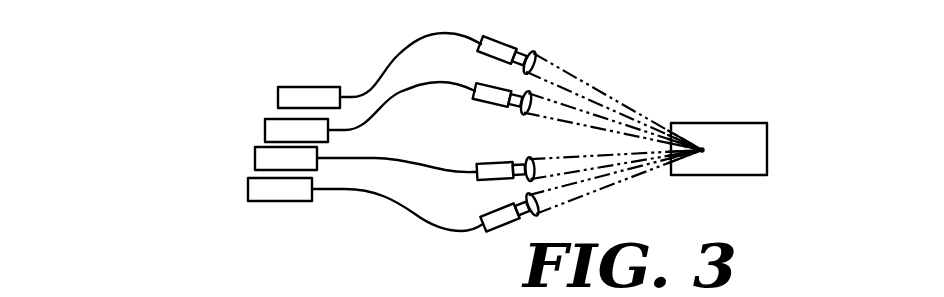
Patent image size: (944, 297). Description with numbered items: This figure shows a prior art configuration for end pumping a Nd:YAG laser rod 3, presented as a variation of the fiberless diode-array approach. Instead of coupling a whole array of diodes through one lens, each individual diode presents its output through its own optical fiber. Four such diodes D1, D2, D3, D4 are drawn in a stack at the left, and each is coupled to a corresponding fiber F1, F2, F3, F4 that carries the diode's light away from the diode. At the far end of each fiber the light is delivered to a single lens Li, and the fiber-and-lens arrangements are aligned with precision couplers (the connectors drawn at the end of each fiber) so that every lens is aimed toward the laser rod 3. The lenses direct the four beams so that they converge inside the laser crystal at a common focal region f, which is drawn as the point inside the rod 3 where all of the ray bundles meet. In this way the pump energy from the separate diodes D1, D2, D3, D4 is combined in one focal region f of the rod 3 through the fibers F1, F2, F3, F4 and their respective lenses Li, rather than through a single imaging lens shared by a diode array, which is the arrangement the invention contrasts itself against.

The diode D1 is at (278, 97).
The diode D2 is at (265, 130).
The diode D3 is at (255, 160).
The diode D4 is at (248, 189).
The fiber F1 is at (398, 51).
The fiber F2 is at (400, 95).
The fiber F3 is at (396, 158).
The fiber F4 is at (395, 202).
The lens Li is at (534, 55).
The laser rod 3 is at (718, 123).
The common focal region f is at (702, 152).